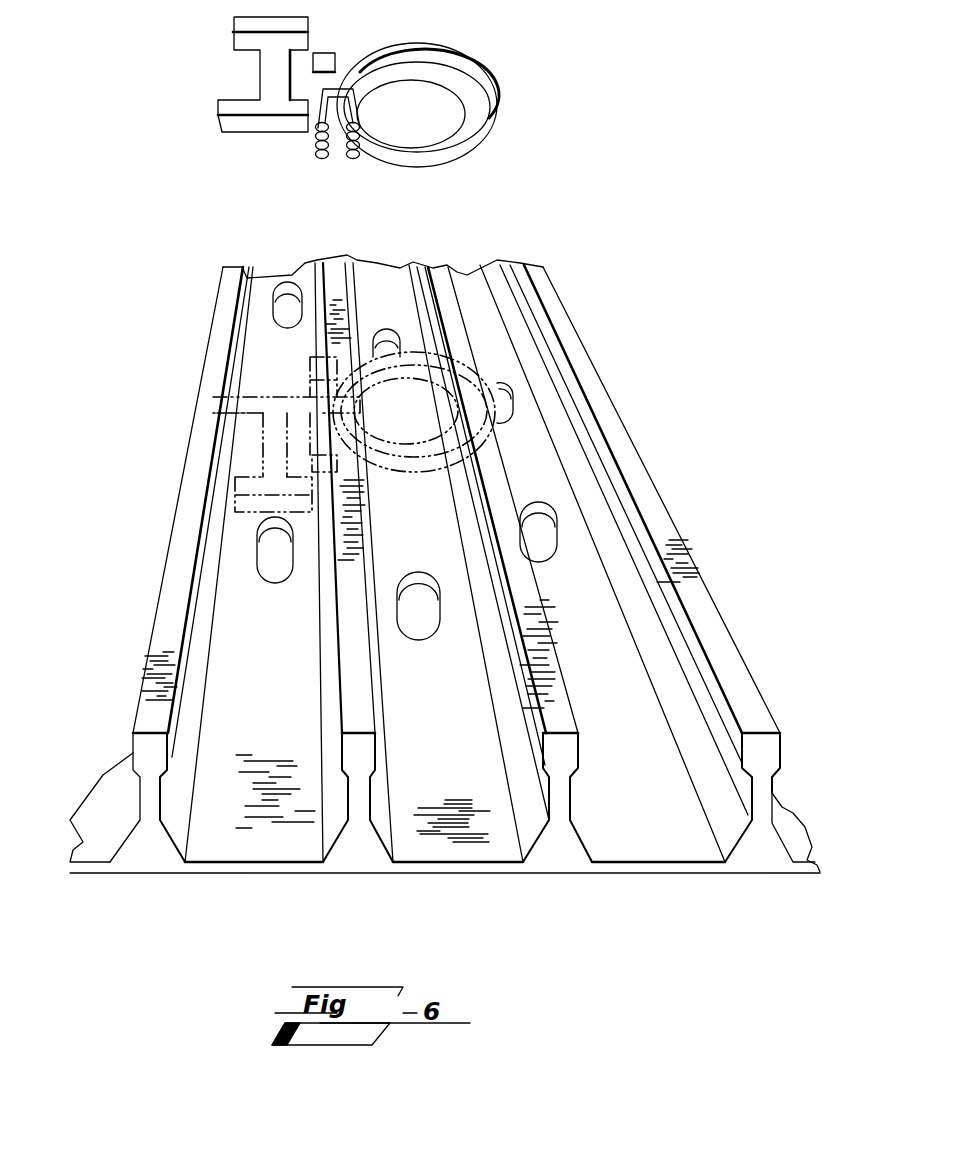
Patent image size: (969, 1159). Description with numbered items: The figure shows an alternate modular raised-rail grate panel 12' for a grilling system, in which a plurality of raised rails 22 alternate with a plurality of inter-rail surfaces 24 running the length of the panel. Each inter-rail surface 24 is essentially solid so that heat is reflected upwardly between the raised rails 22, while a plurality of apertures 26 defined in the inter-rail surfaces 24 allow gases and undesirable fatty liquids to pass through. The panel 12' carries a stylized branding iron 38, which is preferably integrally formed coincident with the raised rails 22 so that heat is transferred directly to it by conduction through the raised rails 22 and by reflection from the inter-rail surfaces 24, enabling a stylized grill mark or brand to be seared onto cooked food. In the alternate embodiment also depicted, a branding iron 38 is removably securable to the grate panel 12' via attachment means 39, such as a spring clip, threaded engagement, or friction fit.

The modular raised-rail grate panel 12' is at (445, 564).
The raised rail 22 is at (193, 455).
The inter-rail surface 24 is at (248, 847).
The aperture 26 is at (253, 545).
The branding iron 38 is at (458, 145).
The attachment means 39 is at (317, 157).